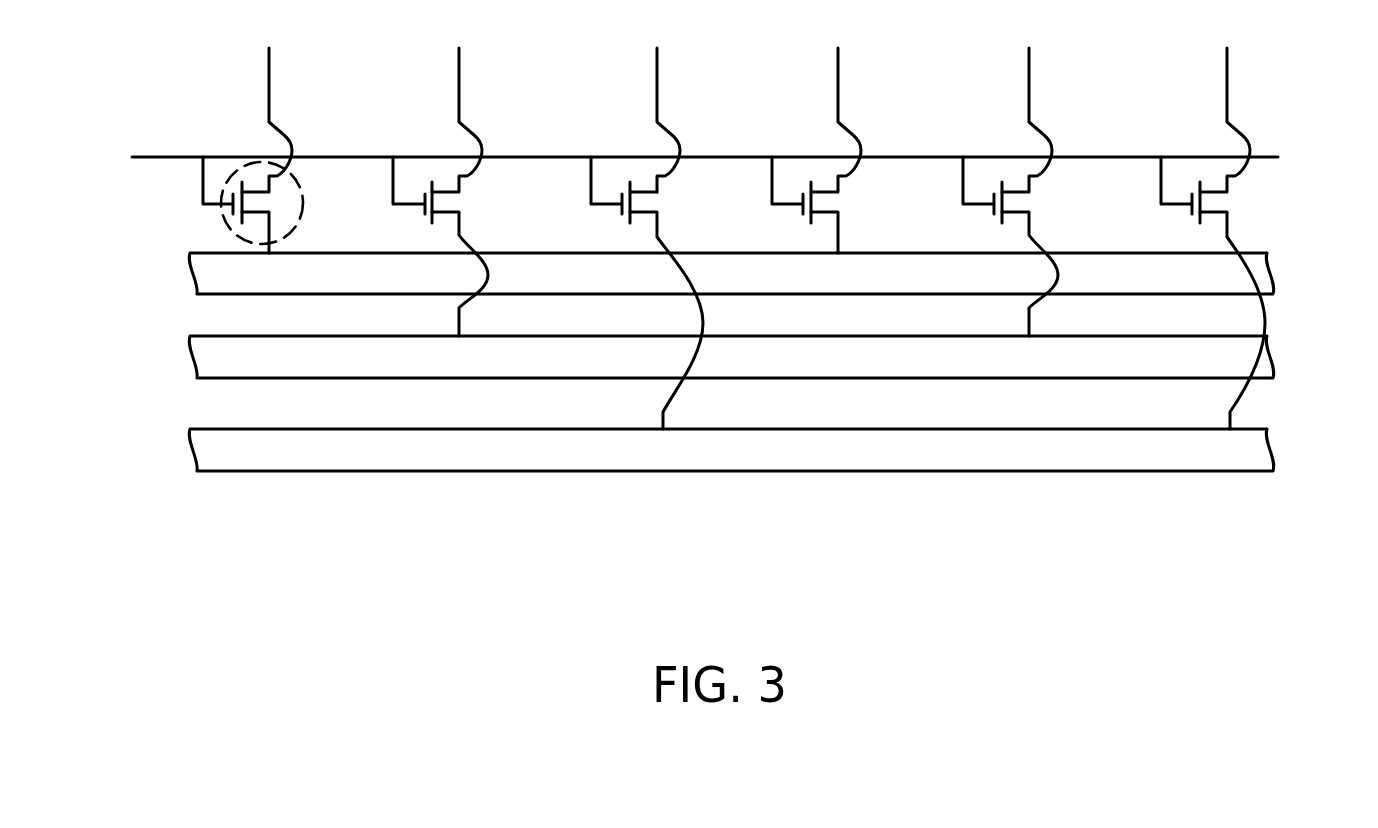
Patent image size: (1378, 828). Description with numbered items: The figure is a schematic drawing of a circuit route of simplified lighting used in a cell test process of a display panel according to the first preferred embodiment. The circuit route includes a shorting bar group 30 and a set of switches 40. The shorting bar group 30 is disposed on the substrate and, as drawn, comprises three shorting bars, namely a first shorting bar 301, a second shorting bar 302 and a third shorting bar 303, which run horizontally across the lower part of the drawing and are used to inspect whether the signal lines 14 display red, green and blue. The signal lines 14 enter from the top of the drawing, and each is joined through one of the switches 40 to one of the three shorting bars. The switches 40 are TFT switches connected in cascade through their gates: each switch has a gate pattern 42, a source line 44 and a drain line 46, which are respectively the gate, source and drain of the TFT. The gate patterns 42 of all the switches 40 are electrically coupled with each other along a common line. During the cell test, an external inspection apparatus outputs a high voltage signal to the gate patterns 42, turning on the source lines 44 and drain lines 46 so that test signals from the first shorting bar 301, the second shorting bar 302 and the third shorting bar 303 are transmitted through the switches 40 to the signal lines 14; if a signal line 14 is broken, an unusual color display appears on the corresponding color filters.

The signal lines 14 is at (263, 90).
The switches 40 is at (223, 225).
The gate pattern 42 is at (592, 190).
The source line 44 is at (645, 190).
The drain line 46 is at (660, 225).
The shorting bar group 30 is at (736, 389).
The first shorting bar 301 is at (190, 273).
The second shorting bar 302 is at (192, 350).
The third shorting bar 303 is at (193, 452).